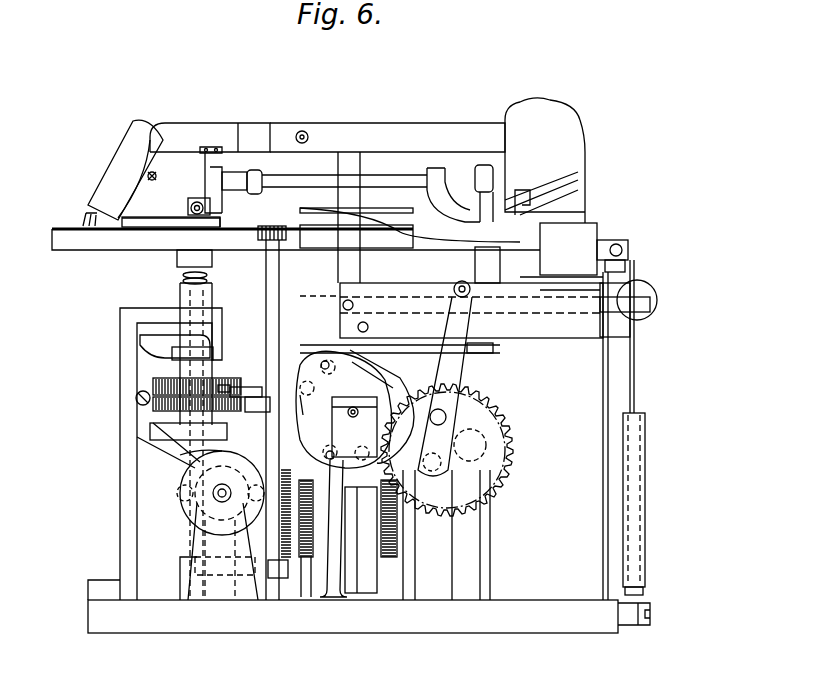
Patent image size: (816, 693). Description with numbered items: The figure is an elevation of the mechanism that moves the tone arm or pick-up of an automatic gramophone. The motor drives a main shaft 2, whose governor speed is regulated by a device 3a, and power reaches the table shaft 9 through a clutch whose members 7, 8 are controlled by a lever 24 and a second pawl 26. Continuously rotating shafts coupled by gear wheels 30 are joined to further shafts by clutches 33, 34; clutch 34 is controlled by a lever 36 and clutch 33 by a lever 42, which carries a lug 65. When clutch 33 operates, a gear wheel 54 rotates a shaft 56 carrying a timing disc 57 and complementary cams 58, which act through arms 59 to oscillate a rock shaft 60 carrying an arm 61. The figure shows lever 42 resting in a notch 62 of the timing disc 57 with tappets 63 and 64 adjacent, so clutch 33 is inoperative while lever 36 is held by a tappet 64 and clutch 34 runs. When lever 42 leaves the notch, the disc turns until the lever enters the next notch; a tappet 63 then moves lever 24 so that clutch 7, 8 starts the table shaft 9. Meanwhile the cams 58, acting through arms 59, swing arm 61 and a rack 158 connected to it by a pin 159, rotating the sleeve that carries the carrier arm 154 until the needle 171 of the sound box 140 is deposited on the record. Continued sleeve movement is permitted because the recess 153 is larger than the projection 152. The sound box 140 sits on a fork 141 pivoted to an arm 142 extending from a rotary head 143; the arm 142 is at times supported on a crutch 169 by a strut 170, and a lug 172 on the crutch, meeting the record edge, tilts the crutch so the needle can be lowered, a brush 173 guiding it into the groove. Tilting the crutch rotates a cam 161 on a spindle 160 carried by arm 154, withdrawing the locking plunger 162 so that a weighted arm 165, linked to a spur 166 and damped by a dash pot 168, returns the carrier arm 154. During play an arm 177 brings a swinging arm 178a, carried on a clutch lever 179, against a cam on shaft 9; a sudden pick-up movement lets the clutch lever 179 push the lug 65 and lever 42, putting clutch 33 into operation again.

The main shaft 2 is at (215, 492).
The speed regulating device 3a is at (282, 580).
The driven clutch member 7 is at (153, 385).
The clutch plate 8 is at (153, 408).
The table shaft 9 is at (180, 292).
The lever 24 is at (246, 397).
The second pawl 26 is at (232, 386).
The gear wheels 30 is at (285, 512).
The clutch 33 is at (394, 488).
The clutch 34 is at (304, 592).
The lever 36 is at (360, 473).
The lever 42 is at (320, 480).
The gear wheel 54 is at (508, 428).
The shaft 56 is at (360, 410).
The timing disc 57 is at (300, 395).
The complementary cams 58 is at (322, 358).
The arms 59 is at (510, 436).
The rock shaft 60 is at (508, 468).
The arm 61 is at (445, 375).
The notches 62 is at (355, 360).
The tappets 63 is at (325, 362).
The tappets 64 is at (400, 380).
The lug 65 is at (190, 462).
The sound box 140 is at (120, 165).
The fork 141 is at (185, 133).
The arm 142 is at (397, 133).
The rotary head 143 is at (540, 135).
The projection 152 is at (545, 198).
The recess 153 is at (560, 172).
The carrier arm 154 is at (334, 200).
The rack 158 is at (648, 300).
The pin 159 is at (460, 305).
The spindle 160 is at (380, 180).
The cam 161 is at (488, 178).
The locking plunger 162 is at (482, 215).
The weighted arm 165 is at (633, 262).
The spur 166 is at (608, 245).
The dash pot 168 is at (643, 413).
The crutch 169 is at (200, 193).
The strut 170 is at (210, 160).
The needle 171 is at (100, 226).
The lug 172 is at (148, 224).
The brush 173 is at (86, 212).
The arm 177 is at (220, 358).
The swinging arm 178a is at (165, 345).
The clutch lever 179 is at (136, 400).